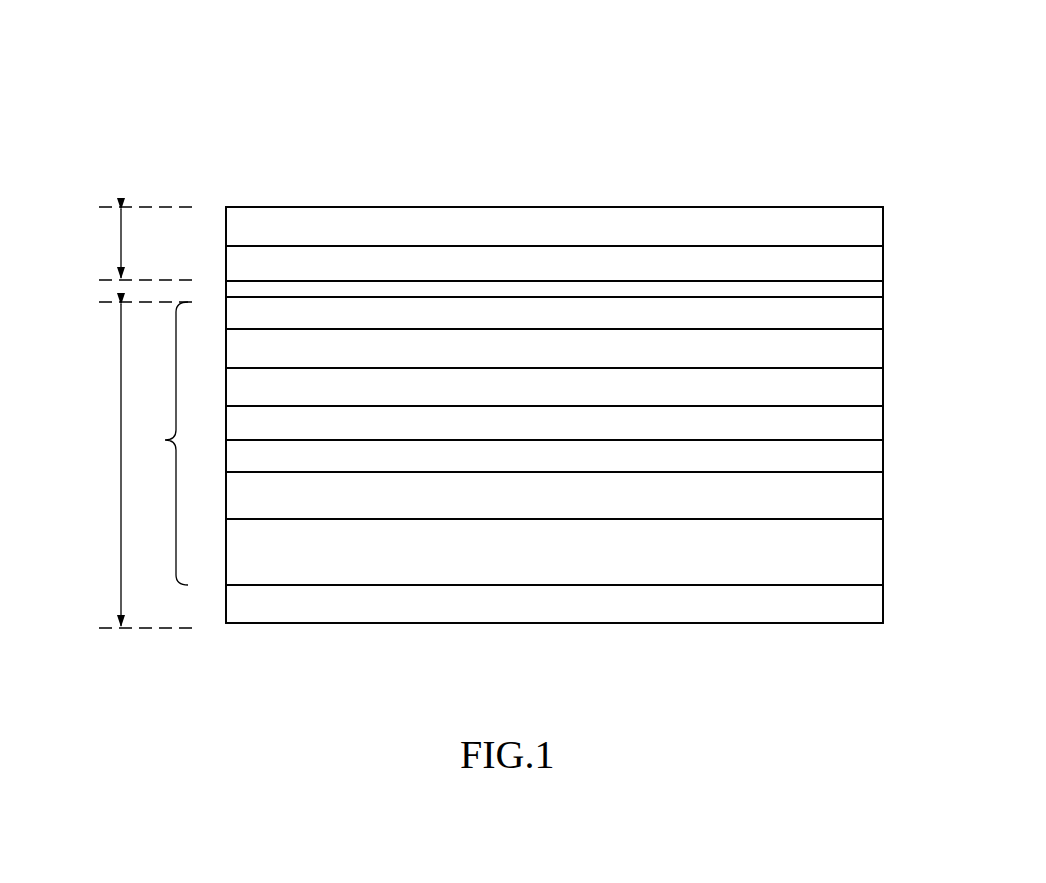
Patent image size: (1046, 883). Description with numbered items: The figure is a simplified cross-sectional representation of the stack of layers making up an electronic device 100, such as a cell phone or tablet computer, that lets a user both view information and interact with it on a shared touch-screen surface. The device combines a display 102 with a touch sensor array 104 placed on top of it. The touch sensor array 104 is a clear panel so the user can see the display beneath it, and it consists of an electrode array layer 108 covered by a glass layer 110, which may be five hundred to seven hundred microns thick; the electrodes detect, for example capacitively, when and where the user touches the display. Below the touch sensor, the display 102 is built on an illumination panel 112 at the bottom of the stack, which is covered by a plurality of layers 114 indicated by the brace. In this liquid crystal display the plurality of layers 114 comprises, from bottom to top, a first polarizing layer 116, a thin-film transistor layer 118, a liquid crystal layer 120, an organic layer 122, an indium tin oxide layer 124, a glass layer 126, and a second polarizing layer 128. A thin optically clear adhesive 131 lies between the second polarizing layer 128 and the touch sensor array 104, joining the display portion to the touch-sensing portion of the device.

The electronic device 100 is at (757, 100).
The display 102 is at (110, 471).
The touch sensor array 104 is at (112, 243).
The electrode array layer 108 is at (571, 274).
The glass layer 110 is at (571, 238).
The illumination panel 112 is at (571, 618).
The plurality of layers 114 is at (159, 443).
The first polarizing layer 116 is at (571, 565).
The thin-film transistor layer 118 is at (571, 504).
The liquid crystal layer 120 is at (571, 466).
The organic layer 122 is at (571, 434).
The indium tin oxide layer 124 is at (571, 398).
The glass layer 126 is at (571, 359).
The second polarizing layer 128 is at (571, 323).
The optically clear adhesive 131 is at (865, 289).